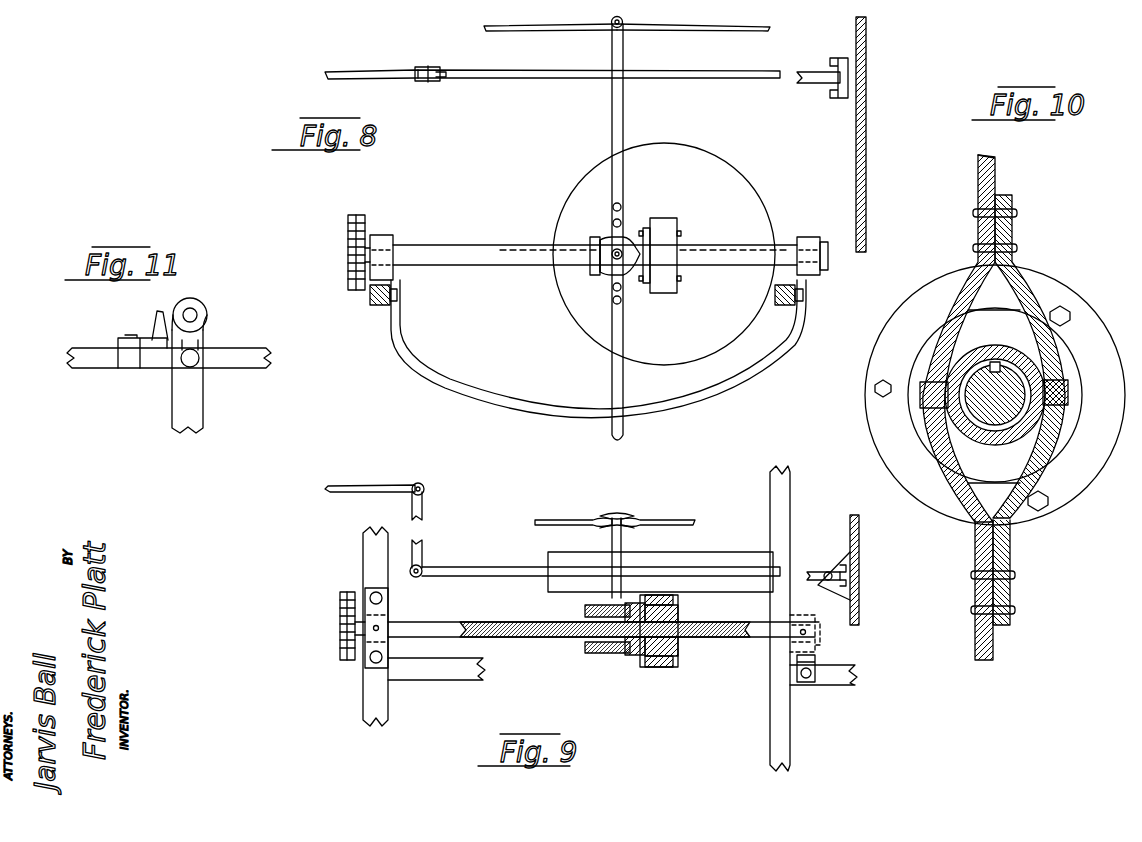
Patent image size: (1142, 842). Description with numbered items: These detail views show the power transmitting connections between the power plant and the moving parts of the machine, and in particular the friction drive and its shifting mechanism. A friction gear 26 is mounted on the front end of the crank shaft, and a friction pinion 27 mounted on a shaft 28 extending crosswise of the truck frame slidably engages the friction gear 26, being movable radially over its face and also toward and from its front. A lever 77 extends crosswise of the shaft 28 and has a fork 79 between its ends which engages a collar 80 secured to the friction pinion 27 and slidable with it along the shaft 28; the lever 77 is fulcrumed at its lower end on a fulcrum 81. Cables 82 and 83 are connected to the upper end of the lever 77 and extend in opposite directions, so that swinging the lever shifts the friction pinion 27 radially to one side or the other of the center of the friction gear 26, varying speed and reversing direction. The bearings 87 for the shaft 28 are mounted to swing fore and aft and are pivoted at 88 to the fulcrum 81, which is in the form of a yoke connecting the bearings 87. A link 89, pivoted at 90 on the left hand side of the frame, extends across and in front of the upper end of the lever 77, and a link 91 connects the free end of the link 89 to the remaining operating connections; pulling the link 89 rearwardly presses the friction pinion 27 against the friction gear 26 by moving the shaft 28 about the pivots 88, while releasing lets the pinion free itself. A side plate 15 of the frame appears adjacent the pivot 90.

In FIG. 8, the side plate 15 is at (867, 103).
In FIG. 9, the side plate 15 is at (860, 553).
In FIG. 8, the friction gear 26 is at (735, 185).
In FIG. 8, the friction pinion 27 is at (664, 237).
In FIG. 9, the friction pinion 27 is at (665, 660).
In FIG. 10, the friction pinion 27 is at (866, 385).
In FIG. 8, the shaft 28 is at (443, 238).
In FIG. 9, the shaft 28 is at (446, 628).
In FIG. 10, the shaft 28 is at (975, 393).
In FIG. 11, the shaft 28 is at (193, 316).
In FIG. 8, the lever 77 is at (612, 100).
In FIG. 9, the lever 77 is at (621, 540).
In FIG. 10, the lever 77 is at (982, 172).
In FIG. 8, the fork 79 is at (612, 240).
In FIG. 10, the fork 79 is at (935, 350).
In FIG. 8, the collar 80 is at (604, 270).
In FIG. 9, the collar 80 is at (595, 650).
In FIG. 10, the collar 80 is at (948, 418).
In FIG. 8, the fulcrum 81 is at (632, 412).
In FIG. 8, the cable 82 is at (545, 29).
In FIG. 9, the cable 82 is at (556, 520).
In FIG. 8, the cable 83 is at (657, 30).
In FIG. 9, the cable 83 is at (686, 520).
In FIG. 8, the bearings 87 is at (383, 236).
In FIG. 9, the bearings 87 is at (388, 618).
In FIG. 8, the pivots 88 is at (397, 294).
In FIG. 8, the link 89 is at (478, 73).
In FIG. 9, the link 89 is at (498, 568).
In FIG. 8, the pivot 90 is at (832, 64).
In FIG. 9, the pivot 90 is at (828, 571).
In FIG. 9, the link 91 is at (422, 540).